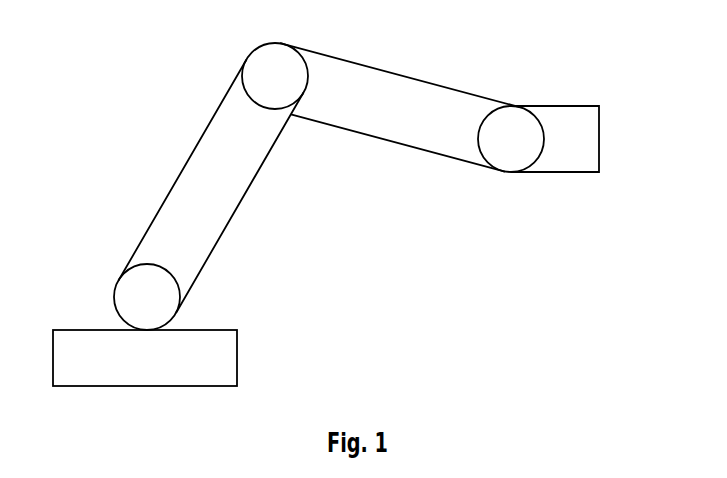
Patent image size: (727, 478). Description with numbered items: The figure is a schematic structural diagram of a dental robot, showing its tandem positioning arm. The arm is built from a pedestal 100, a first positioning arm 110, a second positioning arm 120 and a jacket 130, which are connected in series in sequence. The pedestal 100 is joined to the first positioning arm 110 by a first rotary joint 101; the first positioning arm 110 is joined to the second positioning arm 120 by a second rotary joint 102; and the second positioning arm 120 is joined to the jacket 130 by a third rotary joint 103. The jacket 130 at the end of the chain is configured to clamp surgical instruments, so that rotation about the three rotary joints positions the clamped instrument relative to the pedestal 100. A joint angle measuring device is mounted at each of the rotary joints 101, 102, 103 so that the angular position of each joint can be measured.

The pedestal 100 is at (234, 330).
The first rotary joint 101 is at (122, 278).
The second rotary joint 102 is at (272, 43).
The third rotary joint 103 is at (512, 105).
The first positioning arm 110 is at (189, 157).
The second positioning arm 120 is at (368, 64).
The jacket 130 is at (587, 105).